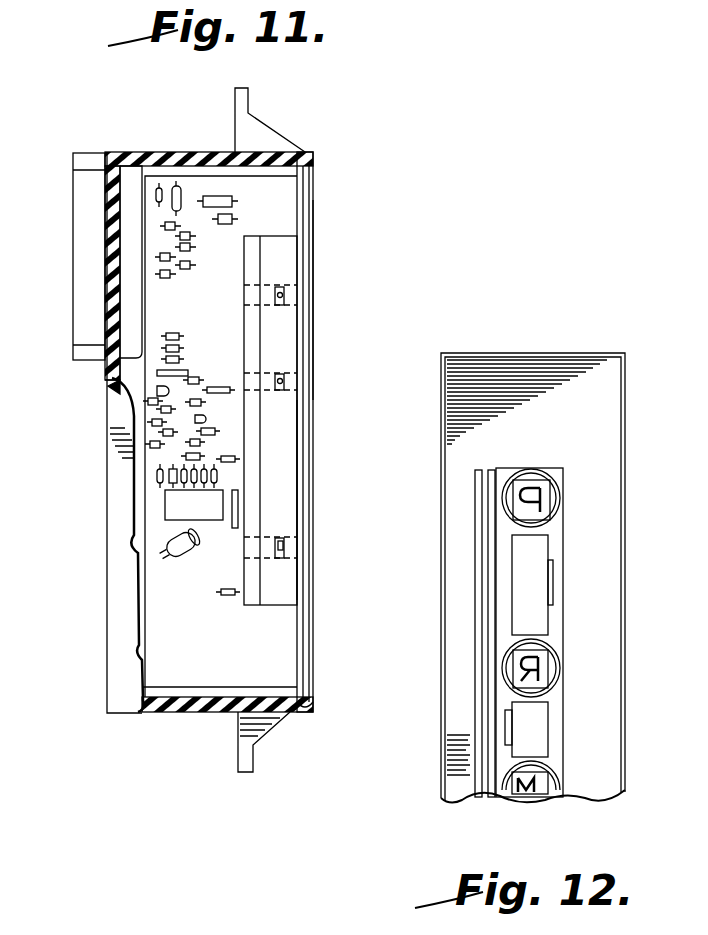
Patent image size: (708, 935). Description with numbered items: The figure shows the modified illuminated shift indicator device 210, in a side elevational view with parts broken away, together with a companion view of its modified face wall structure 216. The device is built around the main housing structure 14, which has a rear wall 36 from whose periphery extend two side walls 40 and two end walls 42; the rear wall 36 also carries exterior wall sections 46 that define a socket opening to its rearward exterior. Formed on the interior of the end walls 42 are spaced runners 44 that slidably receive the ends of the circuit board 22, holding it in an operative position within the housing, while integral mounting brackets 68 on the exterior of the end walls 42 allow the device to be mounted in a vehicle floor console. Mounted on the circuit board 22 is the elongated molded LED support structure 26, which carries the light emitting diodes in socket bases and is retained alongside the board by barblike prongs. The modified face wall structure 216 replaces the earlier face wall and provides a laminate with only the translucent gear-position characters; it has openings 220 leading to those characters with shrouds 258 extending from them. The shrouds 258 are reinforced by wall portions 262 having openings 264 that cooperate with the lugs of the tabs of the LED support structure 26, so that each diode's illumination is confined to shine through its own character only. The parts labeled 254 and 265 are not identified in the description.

In FIG. 11, the main housing structure 14 is at (196, 118).
In FIG. 11, the circuit board 22 is at (312, 182).
In FIG. 11, the LED support structure 26 is at (262, 256).
In FIG. 11, the rear wall 36 is at (118, 378).
In FIG. 11, the side wall 40 is at (126, 580).
In FIG. 11, the end wall 42 is at (132, 152).
In FIG. 11, the runners 44 is at (230, 170).
In FIG. 11, the exterior wall sections 46 is at (78, 312).
In FIG. 11, the mounting bracket 68 is at (235, 102).
In FIG. 11, the modified device 210 is at (345, 92).
In FIG. 11, the modified face wall structure 216 is at (318, 260).
In FIG. 12, the modified face wall structure 216 is at (620, 316).
In FIG. 12, the openings 220 is at (545, 505).
In FIG. 12, the guide strips 254 is at (633, 486).
In FIG. 12, the shrouds 258 is at (528, 470).
In FIG. 11, the wall portions 262 is at (291, 493).
In FIG. 12, the wall portions 262 is at (506, 604).
In FIG. 11, the openings 264 is at (285, 300).
In FIG. 12, the frame 265 is at (463, 794).